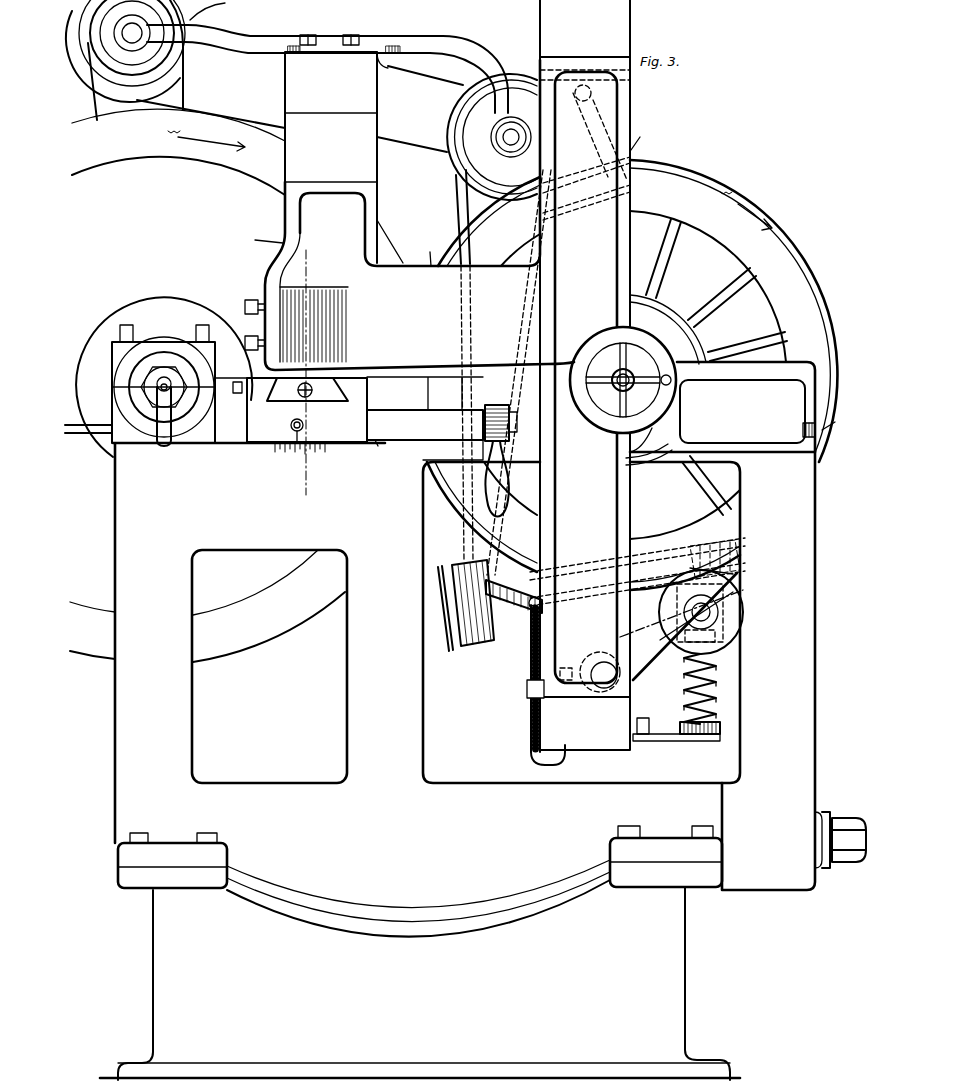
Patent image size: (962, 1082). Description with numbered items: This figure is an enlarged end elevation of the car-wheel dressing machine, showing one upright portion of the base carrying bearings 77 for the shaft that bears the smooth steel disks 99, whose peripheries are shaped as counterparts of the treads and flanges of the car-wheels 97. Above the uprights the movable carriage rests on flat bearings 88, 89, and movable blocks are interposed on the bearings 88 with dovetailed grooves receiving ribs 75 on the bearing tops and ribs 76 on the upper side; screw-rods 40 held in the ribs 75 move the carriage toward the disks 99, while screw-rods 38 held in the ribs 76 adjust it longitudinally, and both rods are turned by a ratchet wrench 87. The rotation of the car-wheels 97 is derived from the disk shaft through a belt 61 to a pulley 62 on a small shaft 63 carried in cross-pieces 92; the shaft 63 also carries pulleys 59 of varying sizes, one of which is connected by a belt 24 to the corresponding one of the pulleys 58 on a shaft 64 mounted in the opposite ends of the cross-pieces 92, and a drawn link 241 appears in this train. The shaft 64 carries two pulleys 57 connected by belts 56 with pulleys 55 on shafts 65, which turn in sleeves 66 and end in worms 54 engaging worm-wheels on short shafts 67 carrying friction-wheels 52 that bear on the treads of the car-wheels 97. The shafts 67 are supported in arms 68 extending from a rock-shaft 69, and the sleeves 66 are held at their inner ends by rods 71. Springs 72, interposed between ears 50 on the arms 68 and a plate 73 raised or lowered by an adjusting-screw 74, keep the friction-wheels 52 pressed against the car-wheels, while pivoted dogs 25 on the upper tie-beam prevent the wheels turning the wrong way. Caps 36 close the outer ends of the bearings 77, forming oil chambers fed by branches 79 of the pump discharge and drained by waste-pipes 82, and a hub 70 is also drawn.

The belt 24 is at (262, 122).
The pivoted dogs or stops 25 is at (598, 150).
The caps 36 is at (152, 400).
The screw-rods 38 is at (307, 389).
The screw-rods 40 is at (491, 405).
The ears 50 is at (730, 631).
The friction-wheels 52 is at (740, 612).
The worms 54 is at (706, 548).
The pulleys 55 is at (444, 580).
The belts 56 is at (463, 206).
The pulleys 57 is at (452, 132).
The pulleys 58 is at (478, 86).
The pulleys 59 is at (186, 70).
The belt 61 is at (185, 96).
The pulley 62 is at (92, 70).
The shaft 63 is at (130, 38).
The shaft 64 is at (511, 148).
The shafts 65 is at (448, 615).
The sleeves 66 is at (514, 596).
The short shafts 67 is at (735, 596).
The arms 68 is at (685, 626).
The rock-shaft 69 is at (599, 655).
The hub 70 is at (616, 390).
The rods 71 is at (529, 724).
The springs 72 is at (686, 692).
The plate 73 is at (720, 731).
The adjusting-screw 74 is at (735, 577).
The ribs 75 is at (425, 418).
The ribs 76 is at (314, 412).
The bearings 77 is at (160, 342).
The branches 79 is at (165, 447).
The waste-pipes 82 is at (88, 432).
The ratchet wrench 87 is at (509, 492).
The flat bearings 88 is at (382, 448).
The flat bearings 89 is at (783, 453).
The cross-pieces 92 is at (337, 34).
The car-wheels 97 is at (632, 375).
The disks or wheels 99 is at (207, 385).
The link 241 is at (425, 81).